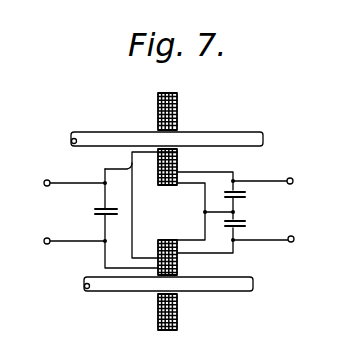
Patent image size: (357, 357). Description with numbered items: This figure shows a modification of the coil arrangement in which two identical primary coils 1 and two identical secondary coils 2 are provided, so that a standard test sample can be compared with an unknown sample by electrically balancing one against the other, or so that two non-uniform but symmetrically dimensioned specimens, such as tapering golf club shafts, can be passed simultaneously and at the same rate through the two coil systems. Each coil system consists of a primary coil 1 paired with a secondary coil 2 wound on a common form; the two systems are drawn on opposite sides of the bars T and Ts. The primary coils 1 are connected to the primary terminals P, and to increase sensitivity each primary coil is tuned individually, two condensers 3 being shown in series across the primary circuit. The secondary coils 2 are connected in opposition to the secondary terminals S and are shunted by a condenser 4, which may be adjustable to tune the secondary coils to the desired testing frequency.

The primary coil 1 is at (177, 100).
The secondary coil 2 is at (177, 118).
The condenser 3 is at (245, 222).
The condenser 4 is at (95, 210).
The top terminal bar T is at (248, 131).
The bottom terminal bar Ts is at (242, 288).
The secondary terminals S is at (44, 236).
The primary terminals P is at (292, 185).